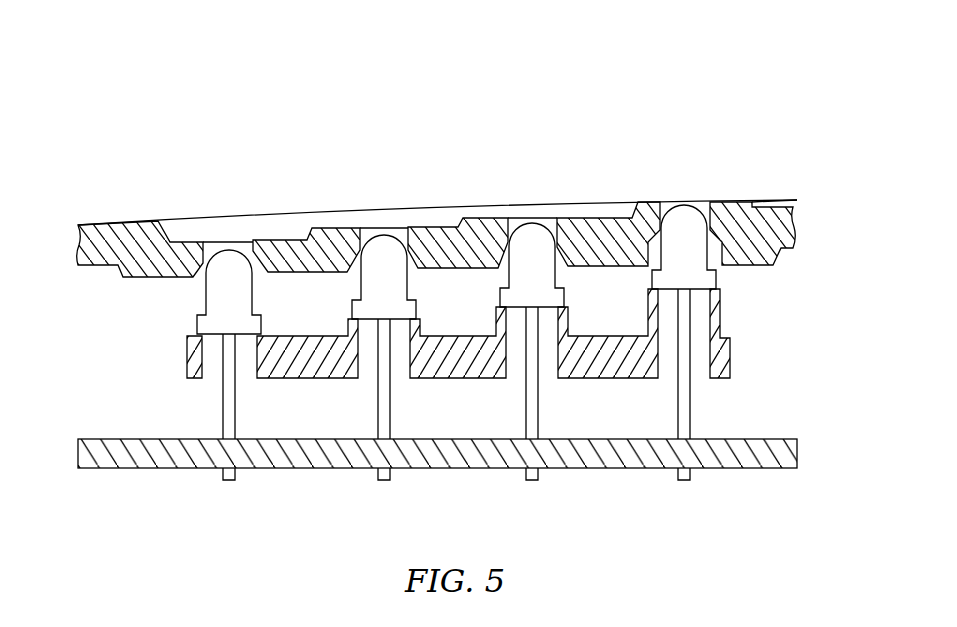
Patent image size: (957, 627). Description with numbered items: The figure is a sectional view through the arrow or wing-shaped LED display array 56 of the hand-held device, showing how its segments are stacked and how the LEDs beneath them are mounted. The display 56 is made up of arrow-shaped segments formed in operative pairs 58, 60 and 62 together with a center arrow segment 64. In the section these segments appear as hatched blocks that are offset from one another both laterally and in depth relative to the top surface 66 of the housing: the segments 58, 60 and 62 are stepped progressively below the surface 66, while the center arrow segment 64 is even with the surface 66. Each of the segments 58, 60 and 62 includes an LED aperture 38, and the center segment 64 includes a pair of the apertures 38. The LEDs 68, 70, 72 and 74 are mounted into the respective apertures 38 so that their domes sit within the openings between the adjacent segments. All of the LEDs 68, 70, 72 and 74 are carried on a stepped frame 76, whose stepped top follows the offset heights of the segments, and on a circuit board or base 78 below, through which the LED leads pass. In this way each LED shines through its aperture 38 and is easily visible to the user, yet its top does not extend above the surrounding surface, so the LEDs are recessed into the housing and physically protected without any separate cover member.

The LED display array 56 is at (468, 320).
The aperture 38 is at (242, 240).
The arrow-shaped segment pair 58 is at (178, 241).
The arrow-shaped segment pair 60 is at (337, 227).
The arrow-shaped segment pair 62 is at (487, 218).
The center arrow segment 64 is at (730, 201).
The top surface 66 is at (397, 208).
The LED 68 is at (207, 295).
The LED 70 is at (362, 282).
The LED 72 is at (510, 274).
The LED 74 is at (701, 264).
The stepped frame 76 is at (464, 379).
The circuit board 78 is at (457, 469).